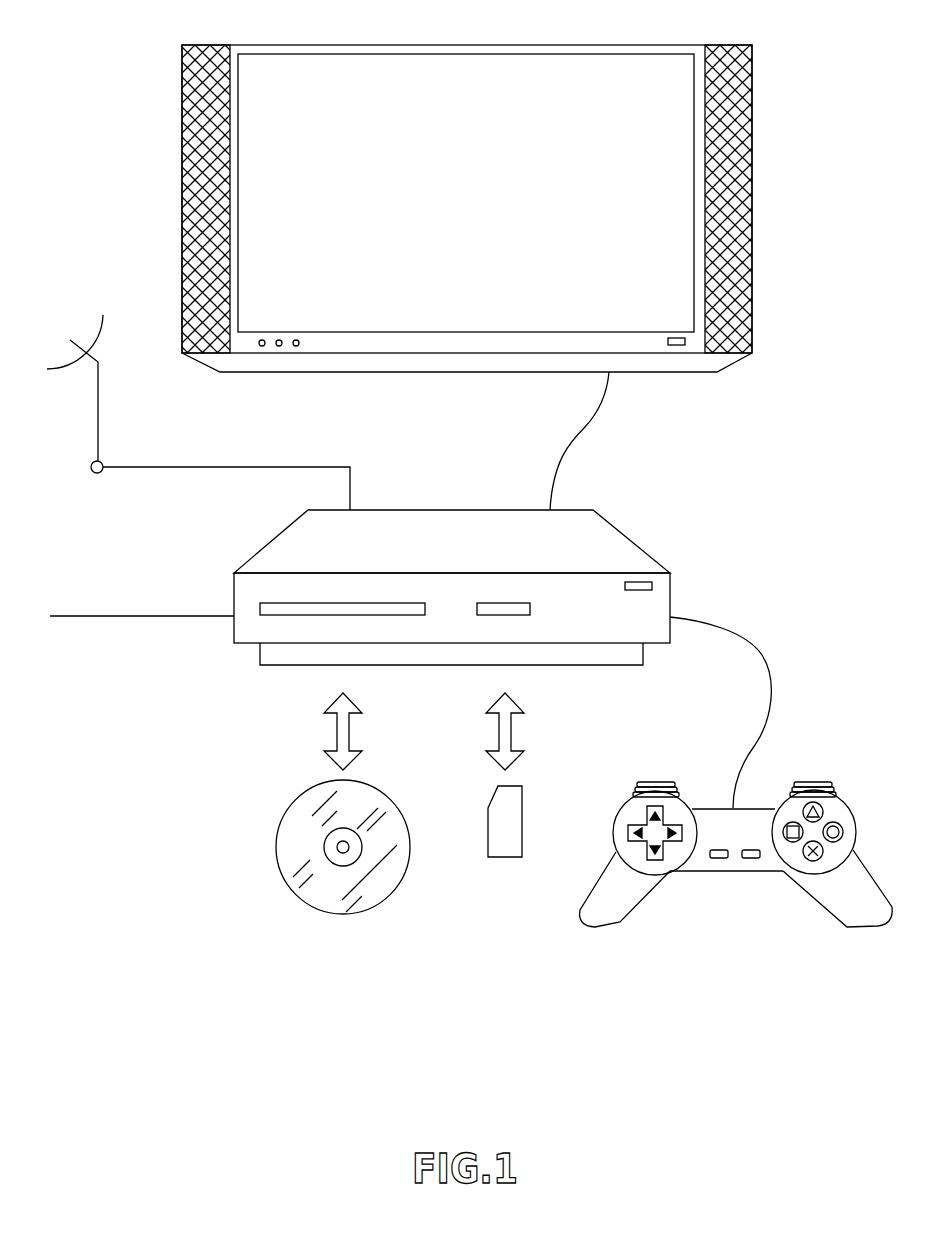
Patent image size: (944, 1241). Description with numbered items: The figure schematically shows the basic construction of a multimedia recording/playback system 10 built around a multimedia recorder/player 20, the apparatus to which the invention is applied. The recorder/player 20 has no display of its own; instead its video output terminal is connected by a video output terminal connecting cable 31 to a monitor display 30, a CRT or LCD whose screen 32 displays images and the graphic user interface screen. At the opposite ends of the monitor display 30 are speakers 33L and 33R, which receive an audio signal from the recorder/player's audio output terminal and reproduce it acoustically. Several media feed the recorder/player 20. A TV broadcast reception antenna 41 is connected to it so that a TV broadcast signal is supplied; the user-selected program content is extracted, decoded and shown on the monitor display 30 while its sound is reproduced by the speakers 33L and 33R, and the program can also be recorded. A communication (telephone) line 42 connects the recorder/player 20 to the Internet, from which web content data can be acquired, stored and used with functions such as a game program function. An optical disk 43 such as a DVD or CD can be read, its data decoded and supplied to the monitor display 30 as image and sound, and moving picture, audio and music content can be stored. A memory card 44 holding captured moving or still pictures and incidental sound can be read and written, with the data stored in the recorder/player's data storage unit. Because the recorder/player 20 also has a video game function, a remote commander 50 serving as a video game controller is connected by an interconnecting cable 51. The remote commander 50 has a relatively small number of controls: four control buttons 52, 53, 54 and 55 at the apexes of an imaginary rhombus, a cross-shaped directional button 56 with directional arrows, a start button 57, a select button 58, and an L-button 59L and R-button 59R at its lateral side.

The multimedia recording/playback system 10 is at (816, 490).
The multimedia recorder/player 20 is at (646, 553).
The monitor display 30 is at (752, 216).
The video output terminal connecting cable 31 is at (585, 427).
The screen 32 is at (623, 58).
The speaker 33L is at (185, 131).
The speaker 33R is at (752, 131).
The TV broadcast reception antenna 41 is at (100, 335).
The communication (telephone) line 42 is at (120, 618).
The optical disk 43 is at (343, 915).
The memory card 44 is at (505, 858).
The remote commander 50 is at (734, 868).
The interconnecting cable 51 is at (760, 652).
The control button 52 is at (798, 808).
The control button 53 is at (836, 830).
The control button 54 is at (813, 861).
The control button 55 is at (793, 843).
The cross-shaped directional button 56 is at (633, 830).
The start button 57 is at (755, 860).
The select button 58 is at (716, 860).
The L-button 59L is at (657, 782).
The R-button 59R is at (818, 782).